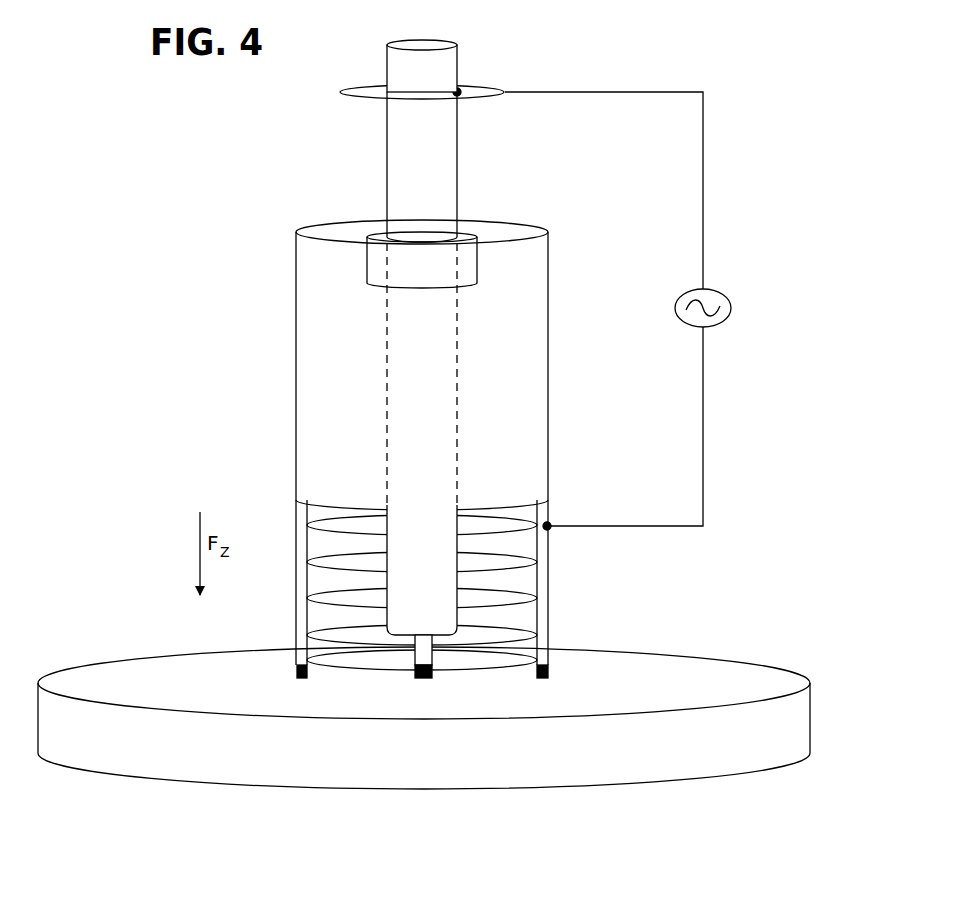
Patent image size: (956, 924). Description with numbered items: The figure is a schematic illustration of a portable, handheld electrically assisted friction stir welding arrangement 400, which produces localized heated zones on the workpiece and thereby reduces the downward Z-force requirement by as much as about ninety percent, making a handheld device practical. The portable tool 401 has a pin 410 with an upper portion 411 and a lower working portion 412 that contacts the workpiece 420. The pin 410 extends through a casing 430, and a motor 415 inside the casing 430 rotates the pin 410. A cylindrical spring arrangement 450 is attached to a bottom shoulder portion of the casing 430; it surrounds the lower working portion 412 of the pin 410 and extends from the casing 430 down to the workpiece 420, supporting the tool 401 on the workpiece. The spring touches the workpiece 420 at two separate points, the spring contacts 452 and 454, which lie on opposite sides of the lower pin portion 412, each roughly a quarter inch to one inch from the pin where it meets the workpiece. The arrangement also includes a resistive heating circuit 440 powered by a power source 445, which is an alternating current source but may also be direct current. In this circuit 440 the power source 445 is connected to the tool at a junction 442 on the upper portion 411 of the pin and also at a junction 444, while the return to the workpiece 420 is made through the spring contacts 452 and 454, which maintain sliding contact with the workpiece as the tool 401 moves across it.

The portable electrically assisted friction stir welding arrangement 400 is at (158, 248).
The portable tool 401 is at (290, 427).
The pin 410 is at (460, 376).
The upper portion 411 is at (387, 172).
The lower working portion 412 is at (418, 678).
The motor 415 is at (472, 260).
The workpiece 420 is at (790, 745).
The casing 430 is at (295, 335).
The resistive heating circuit 440 is at (706, 197).
The junction 442 is at (459, 90).
The junction 444 is at (548, 524).
The power source 445 is at (733, 306).
The cylindrical spring arrangement 450 is at (543, 600).
The spring contact 452 is at (548, 666).
The spring contact 454 is at (298, 667).